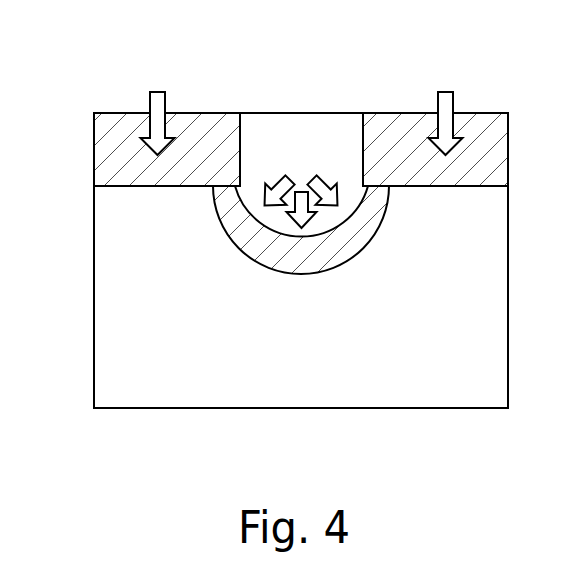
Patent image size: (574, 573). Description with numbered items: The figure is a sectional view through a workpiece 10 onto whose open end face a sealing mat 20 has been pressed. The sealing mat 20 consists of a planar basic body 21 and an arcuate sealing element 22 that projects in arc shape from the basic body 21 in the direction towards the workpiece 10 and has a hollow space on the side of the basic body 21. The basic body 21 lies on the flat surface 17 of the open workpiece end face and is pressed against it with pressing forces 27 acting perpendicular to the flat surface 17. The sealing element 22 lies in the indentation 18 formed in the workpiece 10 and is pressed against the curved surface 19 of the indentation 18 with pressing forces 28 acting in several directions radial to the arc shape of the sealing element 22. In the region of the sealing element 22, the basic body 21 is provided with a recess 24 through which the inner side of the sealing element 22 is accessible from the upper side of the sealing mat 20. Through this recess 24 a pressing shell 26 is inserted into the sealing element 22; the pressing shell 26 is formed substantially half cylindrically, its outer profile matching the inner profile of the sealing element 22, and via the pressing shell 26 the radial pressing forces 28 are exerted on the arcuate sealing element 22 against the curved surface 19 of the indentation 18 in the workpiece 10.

The workpiece 10 is at (94, 337).
The flat surface 17 is at (123, 186).
The indentation 18 is at (300, 252).
The curved surface 19 is at (258, 265).
The sealing mat 20 is at (95, 135).
The basic body 21 is at (128, 135).
The sealing element 22 is at (353, 238).
The recess 24 is at (348, 137).
The pressing shell 26 is at (246, 215).
The pressing forces 27 is at (155, 95).
The radial pressing forces 28 is at (312, 178).